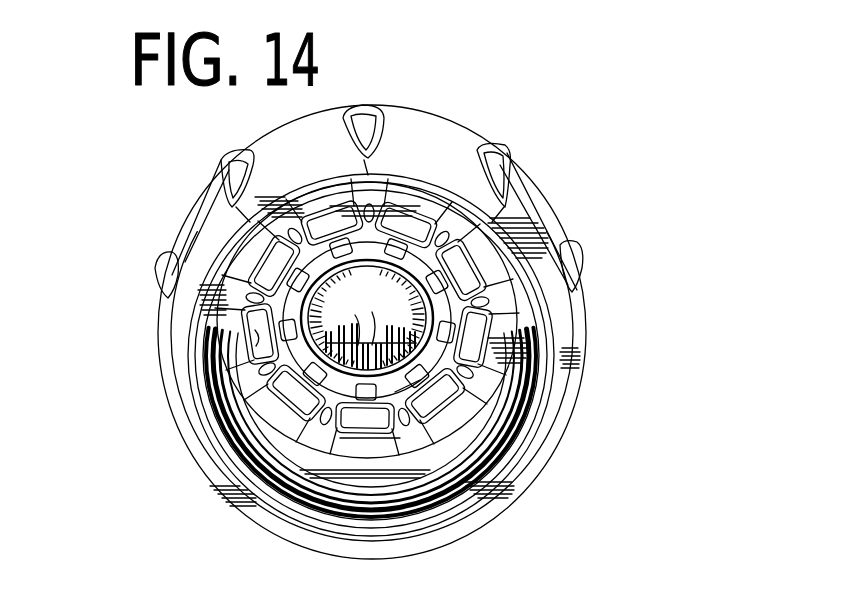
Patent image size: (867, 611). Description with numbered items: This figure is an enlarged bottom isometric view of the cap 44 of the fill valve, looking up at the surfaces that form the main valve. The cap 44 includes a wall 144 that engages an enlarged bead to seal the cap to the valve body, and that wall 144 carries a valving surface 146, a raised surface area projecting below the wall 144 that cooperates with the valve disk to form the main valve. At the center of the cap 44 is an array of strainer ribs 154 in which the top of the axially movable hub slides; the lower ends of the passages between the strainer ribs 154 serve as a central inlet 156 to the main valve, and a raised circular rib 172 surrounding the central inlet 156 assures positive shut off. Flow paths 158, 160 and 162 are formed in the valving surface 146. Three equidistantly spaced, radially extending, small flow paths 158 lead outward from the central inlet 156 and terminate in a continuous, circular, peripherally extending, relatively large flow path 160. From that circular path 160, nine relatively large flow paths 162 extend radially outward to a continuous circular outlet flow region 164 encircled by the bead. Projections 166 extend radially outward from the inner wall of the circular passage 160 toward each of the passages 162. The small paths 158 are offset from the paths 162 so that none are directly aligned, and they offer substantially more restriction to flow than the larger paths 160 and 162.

The cap 44 is at (632, 172).
The wall 144 is at (200, 430).
The valving surface 146 is at (492, 325).
The strainer ribs 154 is at (368, 318).
The central inlet 156 is at (386, 461).
The small flow paths 158 is at (475, 262).
The circular flow path 160 is at (410, 400).
The large flow paths 162 is at (362, 240).
The outlet flow region 164 is at (372, 440).
The projections 166 is at (376, 242).
The raised circular rib 172 is at (255, 337).